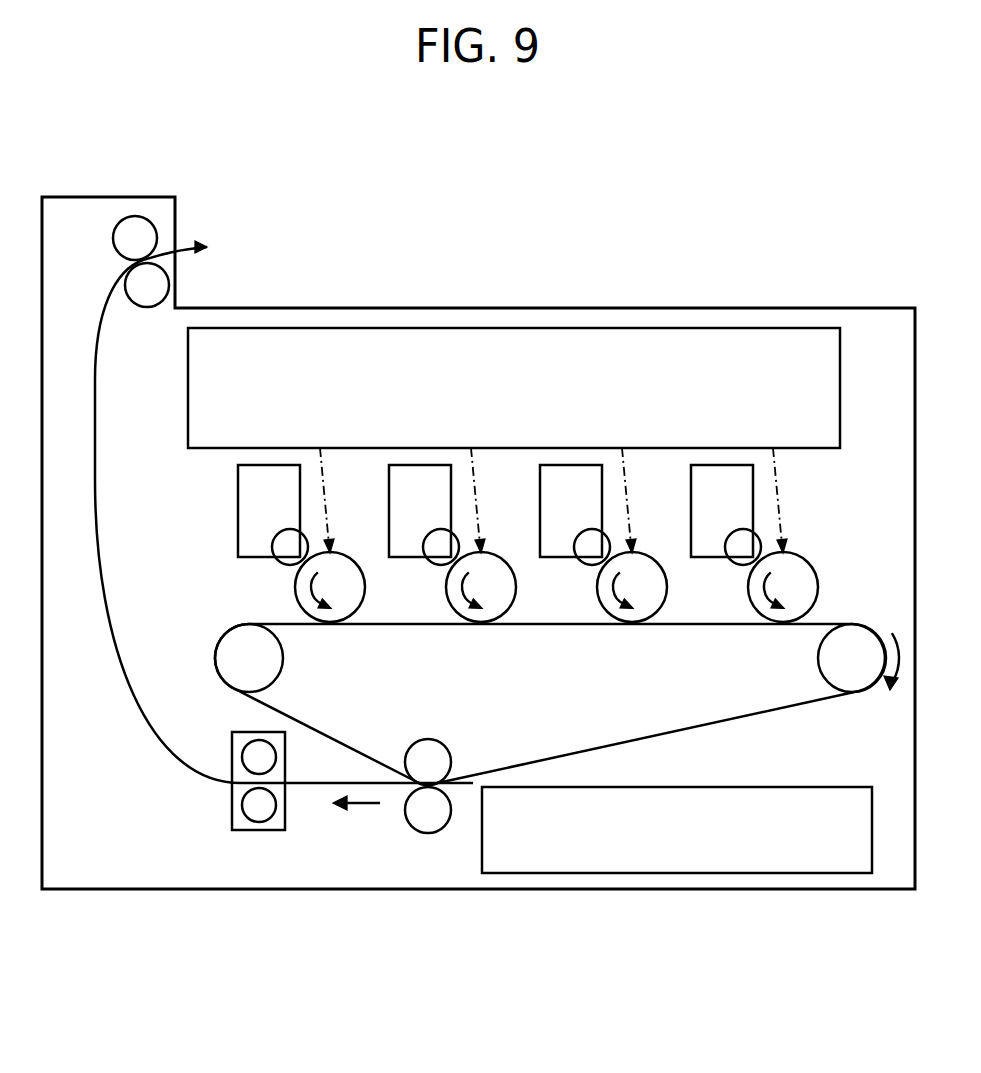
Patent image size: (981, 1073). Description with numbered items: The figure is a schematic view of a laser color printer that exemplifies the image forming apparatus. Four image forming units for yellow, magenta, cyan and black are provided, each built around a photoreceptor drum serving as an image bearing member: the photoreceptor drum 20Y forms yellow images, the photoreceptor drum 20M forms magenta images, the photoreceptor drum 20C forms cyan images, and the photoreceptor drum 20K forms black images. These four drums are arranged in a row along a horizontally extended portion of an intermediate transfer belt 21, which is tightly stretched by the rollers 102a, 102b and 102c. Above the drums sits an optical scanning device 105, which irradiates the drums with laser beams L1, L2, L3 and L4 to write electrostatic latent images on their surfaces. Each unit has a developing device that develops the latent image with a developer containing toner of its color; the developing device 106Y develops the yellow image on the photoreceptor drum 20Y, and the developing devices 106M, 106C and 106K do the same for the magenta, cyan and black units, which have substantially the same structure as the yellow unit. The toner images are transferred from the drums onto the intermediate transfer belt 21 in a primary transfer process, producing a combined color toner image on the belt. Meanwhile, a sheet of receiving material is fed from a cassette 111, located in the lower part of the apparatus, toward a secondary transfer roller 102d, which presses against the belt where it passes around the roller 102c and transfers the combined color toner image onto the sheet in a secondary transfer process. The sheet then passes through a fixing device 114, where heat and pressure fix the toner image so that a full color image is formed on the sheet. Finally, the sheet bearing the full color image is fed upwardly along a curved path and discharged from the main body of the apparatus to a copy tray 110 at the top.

The copy tray 110 is at (482, 308).
The optical scanning device 105 is at (693, 328).
The developing device 106Y is at (275, 470).
The developing device 106M is at (426, 470).
The developing device 106C is at (577, 470).
The developing device 106K is at (728, 470).
The laser beam L1 is at (327, 508).
The laser beam L2 is at (478, 508).
The laser beam L3 is at (629, 508).
The laser beam L4 is at (780, 508).
The photoreceptor drum 20Y is at (298, 596).
The photoreceptor drum 20M is at (449, 596).
The photoreceptor drum 20C is at (600, 596).
The photoreceptor drum 20K is at (751, 596).
The roller 102a is at (275, 663).
The roller 102b is at (820, 663).
The roller 102c is at (431, 748).
The secondary transfer roller 102d is at (412, 822).
The intermediate transfer belt 21 is at (731, 718).
The cassette 111 is at (852, 787).
The fixing device 114 is at (233, 850).